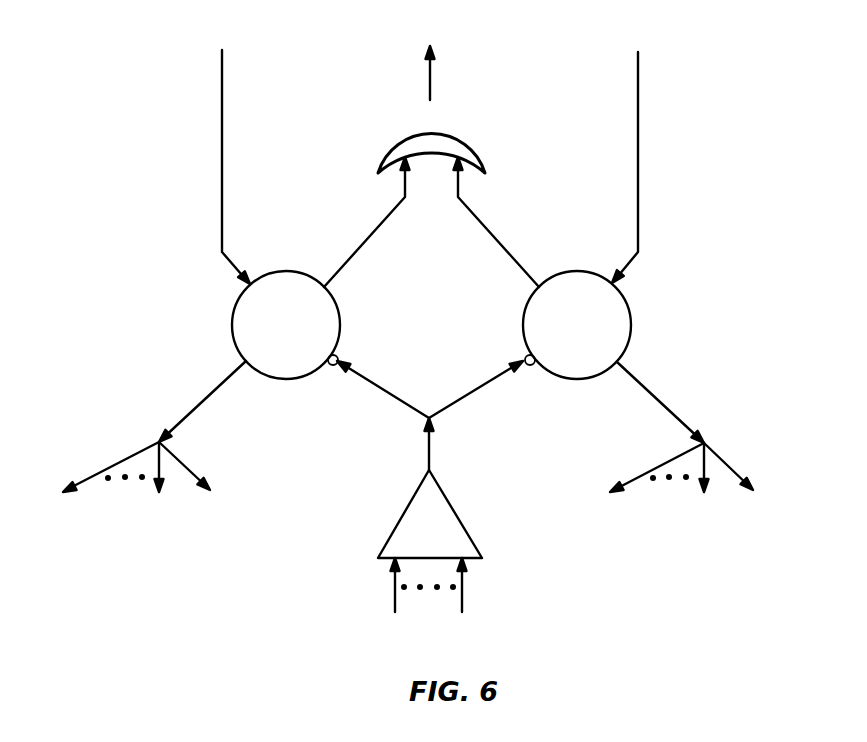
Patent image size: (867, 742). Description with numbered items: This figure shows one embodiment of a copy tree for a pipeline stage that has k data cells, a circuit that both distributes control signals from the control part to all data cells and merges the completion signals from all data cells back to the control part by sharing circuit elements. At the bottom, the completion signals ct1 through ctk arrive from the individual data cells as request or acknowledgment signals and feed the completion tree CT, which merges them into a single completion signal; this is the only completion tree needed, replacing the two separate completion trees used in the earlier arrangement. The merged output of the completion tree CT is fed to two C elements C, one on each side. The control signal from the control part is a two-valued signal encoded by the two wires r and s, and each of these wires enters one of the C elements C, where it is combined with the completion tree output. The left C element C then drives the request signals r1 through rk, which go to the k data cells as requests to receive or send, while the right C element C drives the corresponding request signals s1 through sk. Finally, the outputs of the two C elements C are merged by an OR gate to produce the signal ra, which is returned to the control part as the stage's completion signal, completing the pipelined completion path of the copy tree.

The control wire r is at (233, 153).
The control wire s is at (628, 154).
The completion signal output ra is at (431, 99).
The request signal r1 is at (102, 485).
The request signal rk is at (192, 485).
The request signal s1 is at (647, 487).
The request signal sk is at (737, 486).
The completion signal ct1 is at (393, 603).
The completion signal ctk is at (459, 603).
The C element C is at (431, 325).
The completion tree CT is at (430, 459).